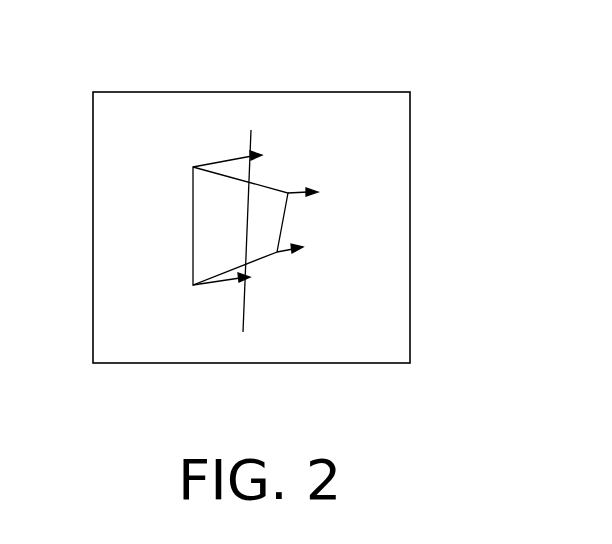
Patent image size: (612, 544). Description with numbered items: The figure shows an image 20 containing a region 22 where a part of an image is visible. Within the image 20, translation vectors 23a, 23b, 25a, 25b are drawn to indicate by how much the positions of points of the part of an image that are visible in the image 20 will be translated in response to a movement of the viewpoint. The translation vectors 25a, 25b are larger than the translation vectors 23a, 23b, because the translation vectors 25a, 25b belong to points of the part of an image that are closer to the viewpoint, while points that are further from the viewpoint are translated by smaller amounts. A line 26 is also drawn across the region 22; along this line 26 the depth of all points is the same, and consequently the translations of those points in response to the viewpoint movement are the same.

The image 20 is at (336, 91).
The region 22 is at (192, 213).
The translation vector 23a is at (297, 188).
The translation vector 23b is at (284, 258).
The translation vector 25a is at (218, 163).
The translation vector 25b is at (215, 287).
The line 26 is at (244, 328).